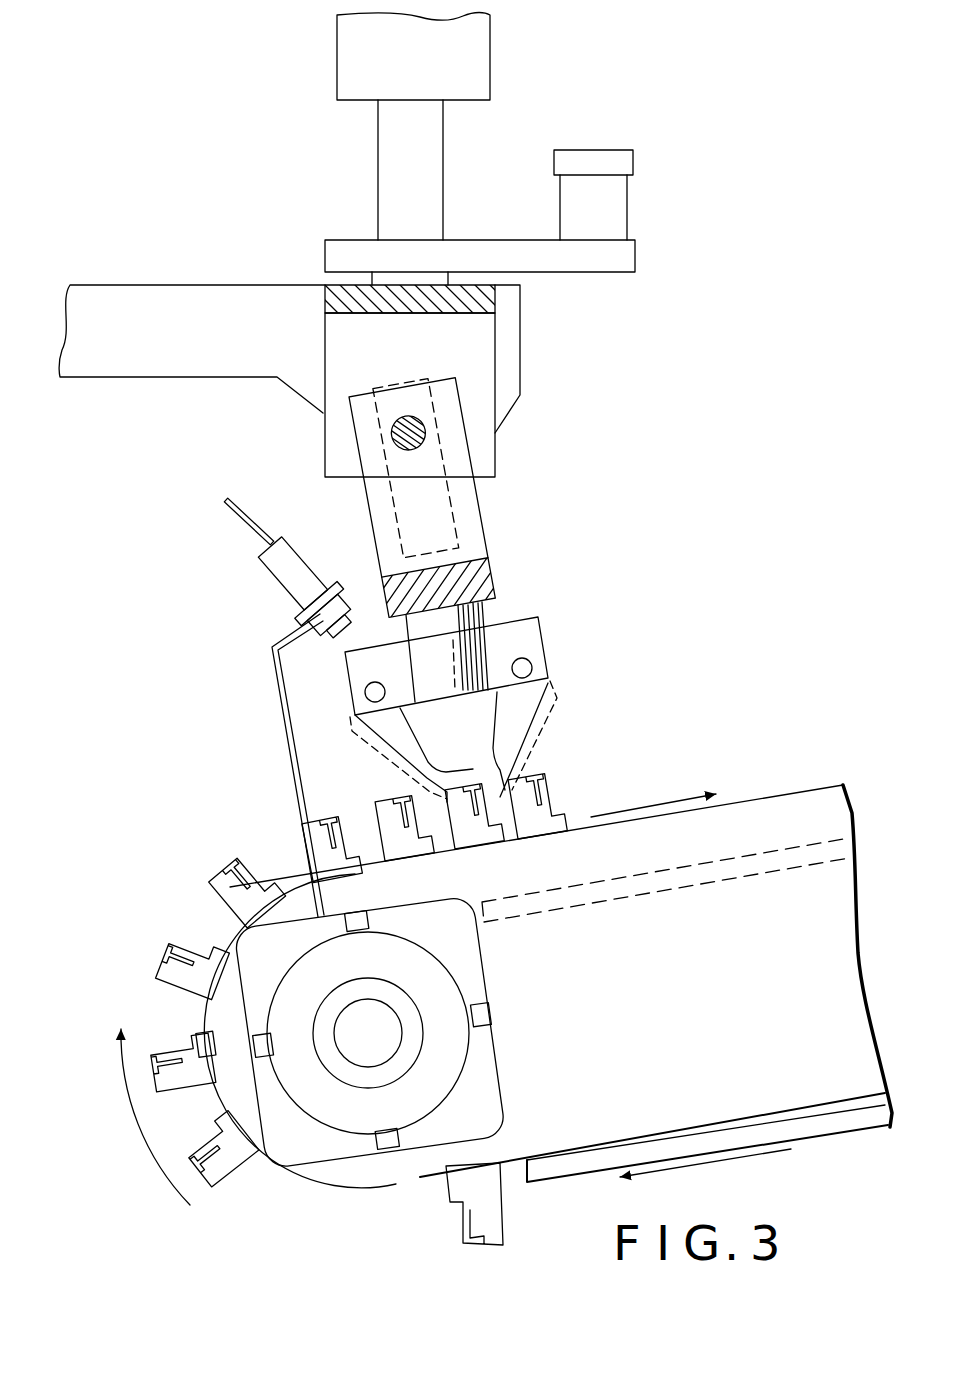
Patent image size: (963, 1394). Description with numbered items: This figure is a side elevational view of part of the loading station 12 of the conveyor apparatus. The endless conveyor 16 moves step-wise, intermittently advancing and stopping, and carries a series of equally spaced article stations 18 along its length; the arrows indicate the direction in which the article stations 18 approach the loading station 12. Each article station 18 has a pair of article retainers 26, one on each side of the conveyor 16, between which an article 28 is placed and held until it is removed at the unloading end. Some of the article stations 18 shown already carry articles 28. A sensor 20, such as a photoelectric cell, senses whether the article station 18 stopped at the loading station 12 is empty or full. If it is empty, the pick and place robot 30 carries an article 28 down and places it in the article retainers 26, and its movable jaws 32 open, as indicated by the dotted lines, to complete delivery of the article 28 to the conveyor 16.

The loading station 12 is at (504, 823).
The endless conveyor 16 is at (809, 782).
The article stations 18 is at (187, 1031).
The article sensor 20 is at (324, 636).
The article retainers 26 is at (198, 953).
The article 28 is at (232, 852).
The pick and place robot 30 is at (522, 577).
The movable jaws 32 is at (502, 740).